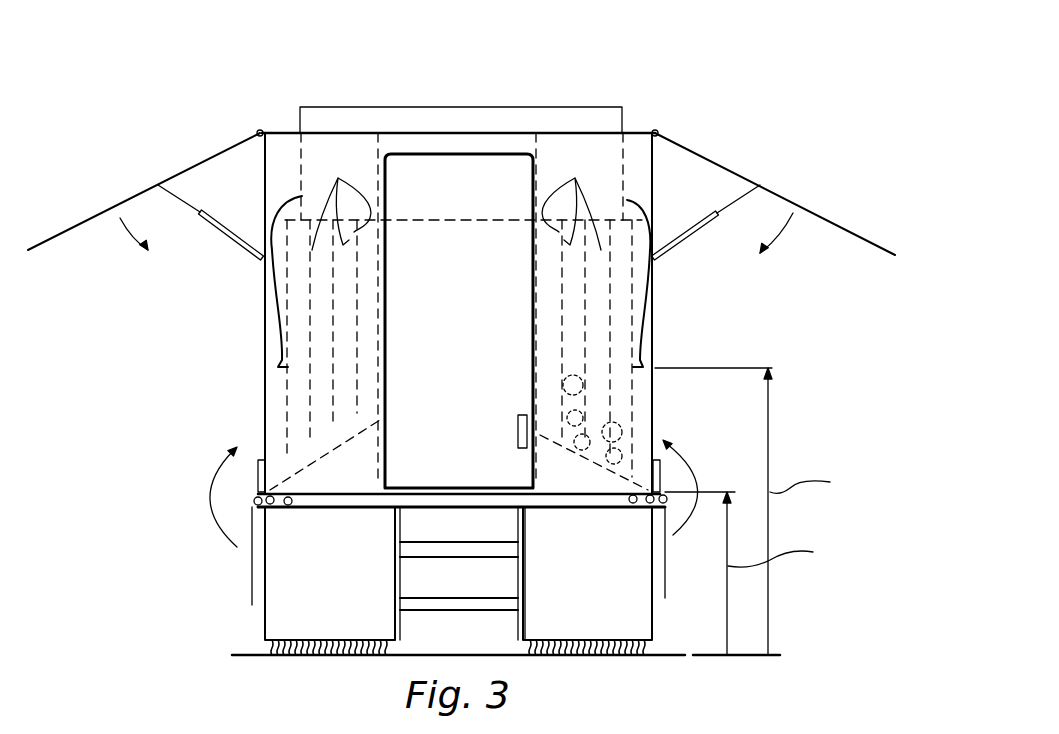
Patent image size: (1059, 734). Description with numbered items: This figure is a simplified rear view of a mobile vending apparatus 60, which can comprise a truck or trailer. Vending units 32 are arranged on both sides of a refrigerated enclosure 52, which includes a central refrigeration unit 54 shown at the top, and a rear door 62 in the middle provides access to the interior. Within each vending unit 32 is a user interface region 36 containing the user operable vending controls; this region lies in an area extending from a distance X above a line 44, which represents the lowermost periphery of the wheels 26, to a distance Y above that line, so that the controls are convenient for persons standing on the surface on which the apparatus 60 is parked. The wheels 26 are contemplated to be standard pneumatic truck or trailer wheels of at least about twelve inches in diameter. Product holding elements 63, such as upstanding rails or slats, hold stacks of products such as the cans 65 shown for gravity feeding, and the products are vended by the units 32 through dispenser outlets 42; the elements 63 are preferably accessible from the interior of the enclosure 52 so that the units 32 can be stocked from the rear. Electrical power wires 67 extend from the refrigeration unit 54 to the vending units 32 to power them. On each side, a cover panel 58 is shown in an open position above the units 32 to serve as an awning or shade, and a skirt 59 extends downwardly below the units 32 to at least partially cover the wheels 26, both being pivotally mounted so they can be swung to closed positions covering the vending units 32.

The mobile vending apparatus 60 is at (742, 95).
The central refrigeration unit 54 is at (603, 107).
The rear door 62 is at (482, 154).
The cover panel 58 is at (83, 218).
The product holding elements 63 is at (456, 201).
The electrical power wires 67 is at (280, 282).
The refrigerated enclosure 52 is at (653, 300).
The user interface region 36 is at (268, 362).
The vending units 32 is at (255, 398).
The dispenser outlets 42 is at (258, 475).
The cans 65 is at (560, 408).
The skirt 59 is at (252, 585).
The wheels 26 is at (268, 648).
The line 44 is at (682, 653).